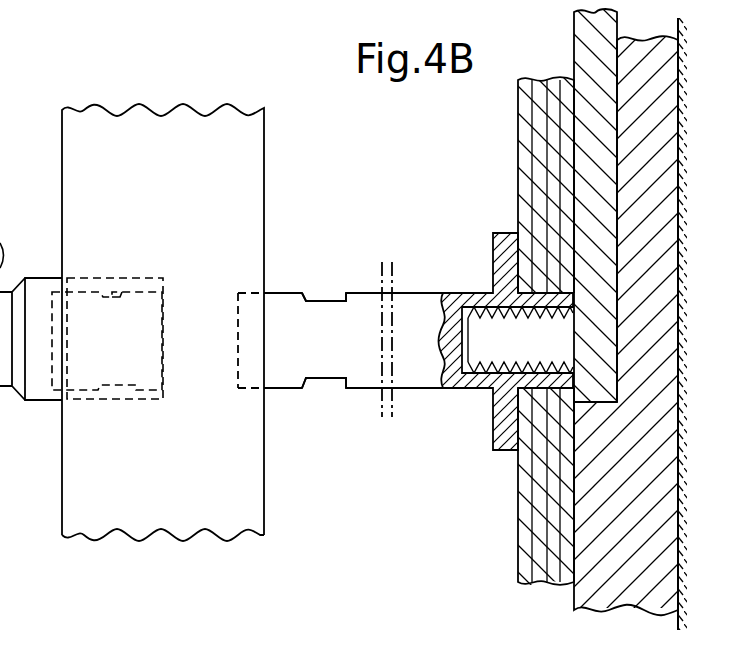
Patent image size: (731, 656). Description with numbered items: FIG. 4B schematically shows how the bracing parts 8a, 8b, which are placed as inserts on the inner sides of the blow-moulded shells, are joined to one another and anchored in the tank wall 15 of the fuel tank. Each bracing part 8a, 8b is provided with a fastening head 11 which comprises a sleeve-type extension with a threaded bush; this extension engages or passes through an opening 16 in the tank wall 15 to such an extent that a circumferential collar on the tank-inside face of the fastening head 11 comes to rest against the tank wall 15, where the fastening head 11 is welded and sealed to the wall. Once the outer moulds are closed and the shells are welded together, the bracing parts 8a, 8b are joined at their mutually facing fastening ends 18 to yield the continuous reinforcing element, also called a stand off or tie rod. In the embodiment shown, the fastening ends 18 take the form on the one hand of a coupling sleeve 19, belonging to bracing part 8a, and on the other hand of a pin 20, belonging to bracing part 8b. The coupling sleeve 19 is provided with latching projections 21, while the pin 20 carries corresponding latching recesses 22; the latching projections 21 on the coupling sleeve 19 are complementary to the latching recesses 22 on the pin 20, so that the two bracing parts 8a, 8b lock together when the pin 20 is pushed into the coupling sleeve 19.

The bracing part 8a is at (8, 242).
The bracing part 8b is at (365, 305).
The fastening head 11 is at (478, 423).
The tank wall 15 is at (527, 558).
The opening 16 is at (556, 285).
The fastening end 18 is at (283, 265).
The coupling sleeve 19 is at (117, 290).
The pin 20 is at (293, 392).
The latching projection 21 is at (118, 298).
The latching recess 22 is at (325, 300).